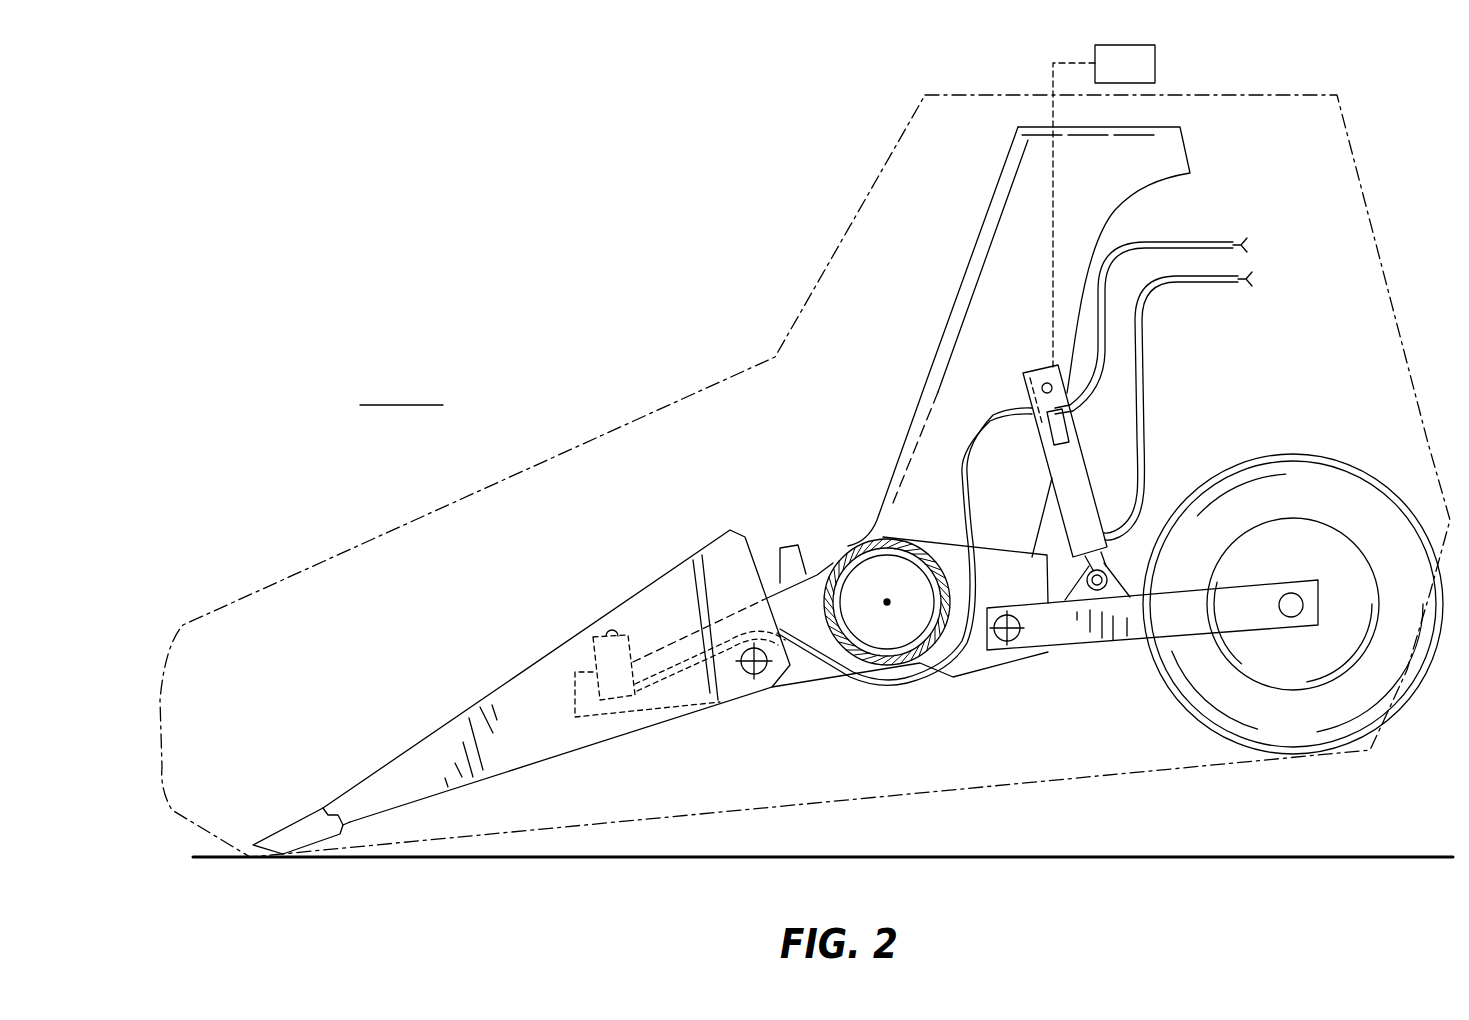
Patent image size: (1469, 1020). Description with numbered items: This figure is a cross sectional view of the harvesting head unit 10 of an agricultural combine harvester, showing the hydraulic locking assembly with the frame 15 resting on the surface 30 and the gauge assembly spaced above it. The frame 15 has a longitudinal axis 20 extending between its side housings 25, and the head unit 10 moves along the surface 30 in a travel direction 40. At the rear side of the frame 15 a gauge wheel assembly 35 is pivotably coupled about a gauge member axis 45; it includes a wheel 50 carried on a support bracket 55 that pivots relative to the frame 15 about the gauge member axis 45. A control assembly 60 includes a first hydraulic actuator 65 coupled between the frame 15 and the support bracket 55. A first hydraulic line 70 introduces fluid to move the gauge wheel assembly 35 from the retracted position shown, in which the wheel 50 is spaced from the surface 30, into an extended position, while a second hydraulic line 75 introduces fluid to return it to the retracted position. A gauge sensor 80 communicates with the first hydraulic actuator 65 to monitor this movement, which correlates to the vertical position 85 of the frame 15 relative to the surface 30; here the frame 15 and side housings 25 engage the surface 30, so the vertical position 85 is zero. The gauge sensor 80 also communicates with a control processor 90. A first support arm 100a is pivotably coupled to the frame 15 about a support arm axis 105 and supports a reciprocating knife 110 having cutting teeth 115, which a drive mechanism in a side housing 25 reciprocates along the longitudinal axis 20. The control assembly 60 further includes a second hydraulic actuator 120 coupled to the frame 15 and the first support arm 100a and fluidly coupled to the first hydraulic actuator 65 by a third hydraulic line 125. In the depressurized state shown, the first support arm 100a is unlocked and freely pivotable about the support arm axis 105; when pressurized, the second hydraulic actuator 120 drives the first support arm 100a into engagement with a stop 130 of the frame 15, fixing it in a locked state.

The harvesting head unit 10 is at (580, 325).
The frame 15 is at (938, 345).
The longitudinal axis 20 is at (887, 600).
The side housing 25 is at (845, 230).
The surface 30 is at (1405, 856).
The gauge wheel assembly 35 is at (1352, 318).
The travel direction 40 is at (393, 405).
The gauge member axis 45 is at (993, 660).
The wheel 50 is at (1387, 473).
The support bracket 55 is at (1153, 620).
The control assembly 60 is at (1335, 247).
The first hydraulic actuator 65 is at (1082, 480).
The first hydraulic line 70 is at (1196, 240).
The second hydraulic line 75 is at (1140, 383).
The gauge sensor 80 is at (1064, 432).
The vertical position 85 is at (192, 845).
The control processor 90 is at (1157, 62).
The first support arm 100a is at (435, 725).
The support arm axis 105 is at (766, 673).
The reciprocating knife 110 is at (292, 789).
The cutting teeth 115 is at (300, 832).
The second hydraulic actuator 120 is at (588, 647).
The third hydraulic line 125 is at (860, 681).
The stop 130 is at (790, 548).